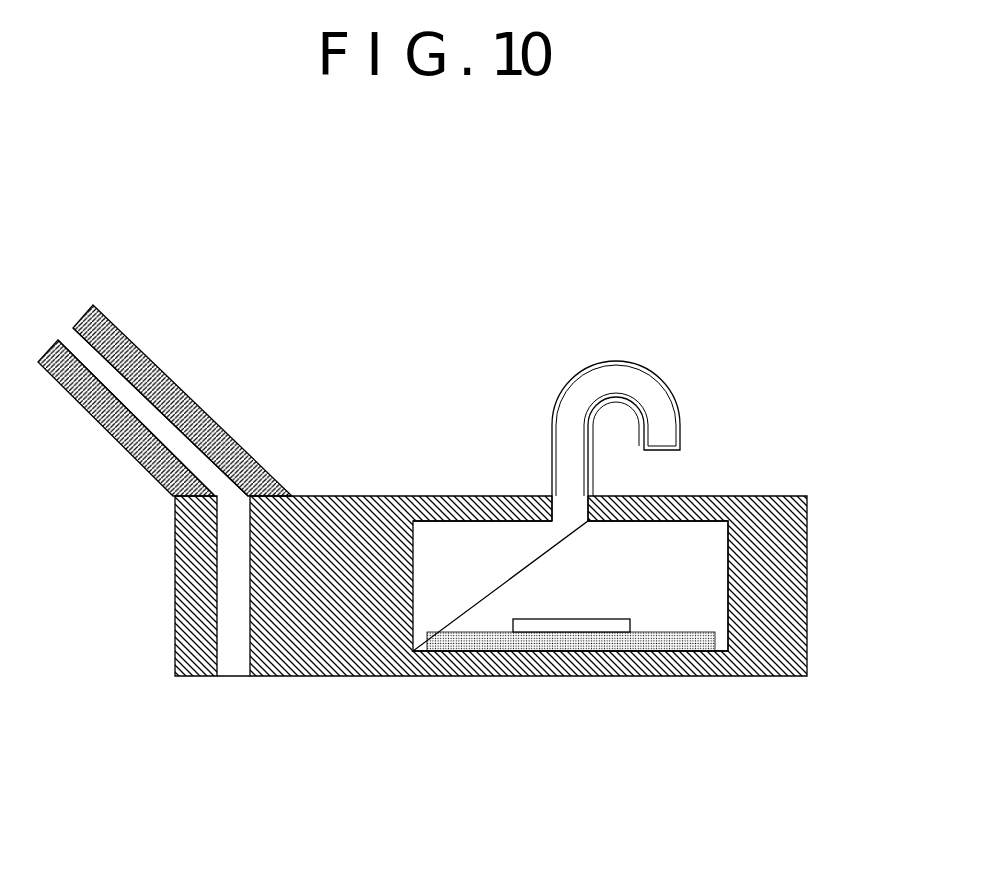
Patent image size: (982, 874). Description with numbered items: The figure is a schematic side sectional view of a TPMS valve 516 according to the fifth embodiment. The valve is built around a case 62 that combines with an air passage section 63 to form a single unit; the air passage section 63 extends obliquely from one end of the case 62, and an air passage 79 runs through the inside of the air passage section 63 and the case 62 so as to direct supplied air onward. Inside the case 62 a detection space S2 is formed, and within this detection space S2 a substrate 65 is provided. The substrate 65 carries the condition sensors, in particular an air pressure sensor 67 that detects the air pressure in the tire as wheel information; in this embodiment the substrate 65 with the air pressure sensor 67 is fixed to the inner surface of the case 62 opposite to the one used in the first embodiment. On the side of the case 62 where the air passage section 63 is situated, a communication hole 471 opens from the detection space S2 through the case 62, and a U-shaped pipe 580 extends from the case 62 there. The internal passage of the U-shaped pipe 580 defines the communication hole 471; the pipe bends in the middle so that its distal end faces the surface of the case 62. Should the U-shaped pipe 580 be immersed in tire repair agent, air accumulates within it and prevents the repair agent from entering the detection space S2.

The TPMS valve 516 is at (691, 311).
The case 62 is at (778, 495).
The detection space S2 is at (713, 573).
The communication hole 471 is at (555, 508).
The U-shaped pipe 580 is at (676, 405).
The air passage section 63 is at (130, 341).
The air passage 79 is at (130, 420).
The substrate 65 is at (580, 645).
The air pressure sensor 67 is at (533, 627).